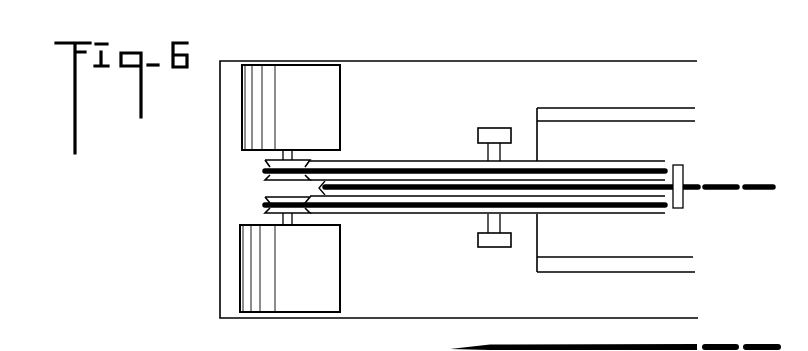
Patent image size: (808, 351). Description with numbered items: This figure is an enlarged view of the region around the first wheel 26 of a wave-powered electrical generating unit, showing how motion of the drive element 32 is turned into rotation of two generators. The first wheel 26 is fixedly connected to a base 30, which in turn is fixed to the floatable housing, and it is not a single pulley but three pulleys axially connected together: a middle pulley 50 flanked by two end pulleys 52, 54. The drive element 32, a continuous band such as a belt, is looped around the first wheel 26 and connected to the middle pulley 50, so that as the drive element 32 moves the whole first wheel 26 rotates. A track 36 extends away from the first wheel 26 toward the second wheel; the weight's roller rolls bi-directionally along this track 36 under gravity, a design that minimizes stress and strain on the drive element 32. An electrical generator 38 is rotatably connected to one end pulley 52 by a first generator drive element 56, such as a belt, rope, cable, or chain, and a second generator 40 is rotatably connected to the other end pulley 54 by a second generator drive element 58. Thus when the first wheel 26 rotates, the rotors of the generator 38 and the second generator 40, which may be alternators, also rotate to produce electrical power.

The first wheel 26 is at (519, 172).
The base 30 is at (423, 279).
The drive element 32 is at (693, 190).
The track 36 is at (578, 263).
The electrical generator 38 is at (295, 267).
The second generator 40 is at (287, 105).
The middle pulley 50 is at (668, 181).
The end pulley 52 is at (663, 212).
The end pulley 54 is at (663, 163).
The first generator drive element 56 is at (315, 208).
The second generator drive element 58 is at (312, 168).